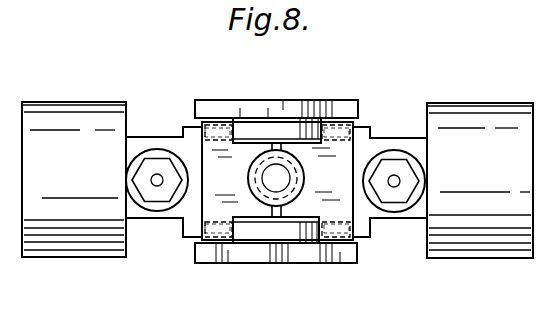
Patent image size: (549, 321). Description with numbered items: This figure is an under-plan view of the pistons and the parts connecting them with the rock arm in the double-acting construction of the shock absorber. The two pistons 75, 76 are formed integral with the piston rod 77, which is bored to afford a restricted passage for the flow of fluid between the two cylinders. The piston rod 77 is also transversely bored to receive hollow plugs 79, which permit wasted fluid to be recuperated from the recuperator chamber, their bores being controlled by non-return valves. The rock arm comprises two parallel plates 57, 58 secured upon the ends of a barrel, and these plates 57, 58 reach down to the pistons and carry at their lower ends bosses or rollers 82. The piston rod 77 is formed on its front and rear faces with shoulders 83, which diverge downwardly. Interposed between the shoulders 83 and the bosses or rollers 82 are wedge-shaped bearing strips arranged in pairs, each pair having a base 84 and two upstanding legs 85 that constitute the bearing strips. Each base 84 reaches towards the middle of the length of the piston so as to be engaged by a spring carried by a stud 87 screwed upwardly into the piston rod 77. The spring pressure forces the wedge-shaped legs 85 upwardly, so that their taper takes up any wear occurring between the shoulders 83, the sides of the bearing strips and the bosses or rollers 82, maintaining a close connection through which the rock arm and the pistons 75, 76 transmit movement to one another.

The plate 57 is at (200, 248).
The plate 58 is at (204, 110).
The piston 75 is at (70, 258).
The piston 76 is at (490, 259).
The piston rod 77 is at (197, 206).
The hollow plug 79 is at (148, 165).
The boss or roller 82 is at (287, 123).
The shoulder 83 is at (192, 124).
The base 84 is at (252, 207).
The upstanding leg 85 is at (332, 126).
The stud 87 is at (262, 157).